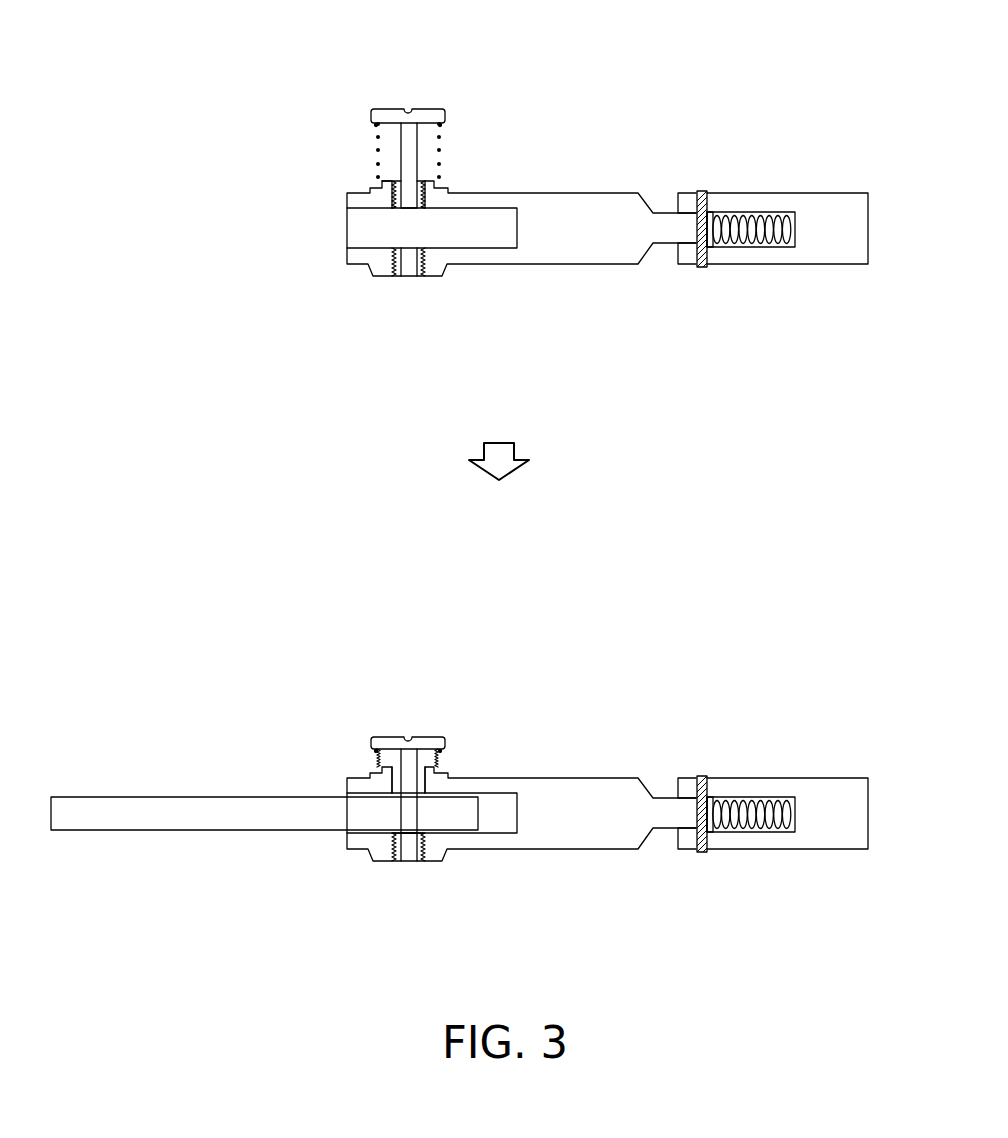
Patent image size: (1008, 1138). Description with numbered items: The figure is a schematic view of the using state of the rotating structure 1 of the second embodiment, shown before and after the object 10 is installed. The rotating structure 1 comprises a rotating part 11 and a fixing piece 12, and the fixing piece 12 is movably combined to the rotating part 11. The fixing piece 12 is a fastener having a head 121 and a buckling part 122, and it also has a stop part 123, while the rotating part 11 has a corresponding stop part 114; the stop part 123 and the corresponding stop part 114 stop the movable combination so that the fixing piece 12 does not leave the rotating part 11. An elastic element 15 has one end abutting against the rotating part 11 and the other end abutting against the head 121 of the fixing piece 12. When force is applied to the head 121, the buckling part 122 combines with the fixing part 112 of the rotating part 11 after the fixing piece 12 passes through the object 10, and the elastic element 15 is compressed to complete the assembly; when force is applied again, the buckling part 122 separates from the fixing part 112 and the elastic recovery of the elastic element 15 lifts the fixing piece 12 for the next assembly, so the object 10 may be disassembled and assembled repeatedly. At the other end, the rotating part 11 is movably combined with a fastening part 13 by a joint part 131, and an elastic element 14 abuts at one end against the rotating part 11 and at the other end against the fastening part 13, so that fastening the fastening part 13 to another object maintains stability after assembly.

The rotating structure 1 is at (210, 40).
The object 10 is at (264, 846).
The rotating part 11 is at (576, 205).
The fixing part 112 is at (393, 260).
The corresponding stop part 114 is at (400, 186).
The fixing piece 12 is at (428, 423).
The head 121 is at (393, 112).
The buckling part 122 is at (418, 187).
The stop part 123 is at (392, 195).
The fastening part 13 is at (822, 200).
The joint part 131 is at (698, 192).
The elastic element 14 is at (768, 242).
The elastic element 15 is at (378, 162).